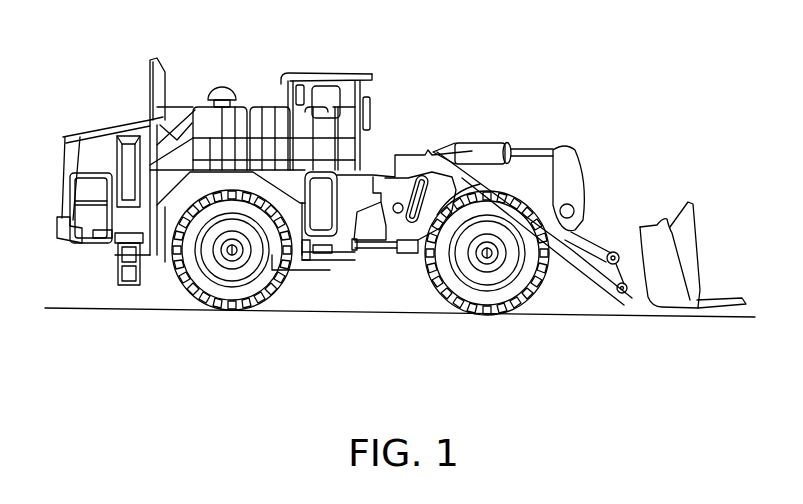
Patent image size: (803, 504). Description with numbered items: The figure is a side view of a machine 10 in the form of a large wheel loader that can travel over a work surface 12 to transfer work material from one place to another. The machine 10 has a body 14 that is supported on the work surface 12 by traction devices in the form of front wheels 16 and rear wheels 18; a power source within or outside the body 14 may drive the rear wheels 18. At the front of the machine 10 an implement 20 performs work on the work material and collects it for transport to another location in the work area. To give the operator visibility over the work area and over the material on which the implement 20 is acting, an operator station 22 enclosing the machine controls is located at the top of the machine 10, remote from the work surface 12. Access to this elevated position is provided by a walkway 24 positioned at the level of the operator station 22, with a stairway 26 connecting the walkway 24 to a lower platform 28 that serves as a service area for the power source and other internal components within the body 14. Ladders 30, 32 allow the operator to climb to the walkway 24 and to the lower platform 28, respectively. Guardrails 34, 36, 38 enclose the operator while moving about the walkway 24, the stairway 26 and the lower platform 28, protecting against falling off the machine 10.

The machine 10 is at (600, 91).
The work surface 12 is at (630, 318).
The body 14 is at (103, 147).
The front wheels 16 is at (436, 287).
The rear wheels 18 is at (278, 290).
The implement 20 is at (692, 262).
The operator station 22 is at (330, 73).
The walkway 24 is at (345, 170).
The stairway 26 is at (167, 207).
The lower platform 28 is at (92, 232).
The ladder 30 is at (338, 268).
The ladder 32 is at (118, 278).
The guardrail 34 is at (274, 100).
The guardrail 36 is at (197, 108).
The guardrail 38 is at (80, 175).